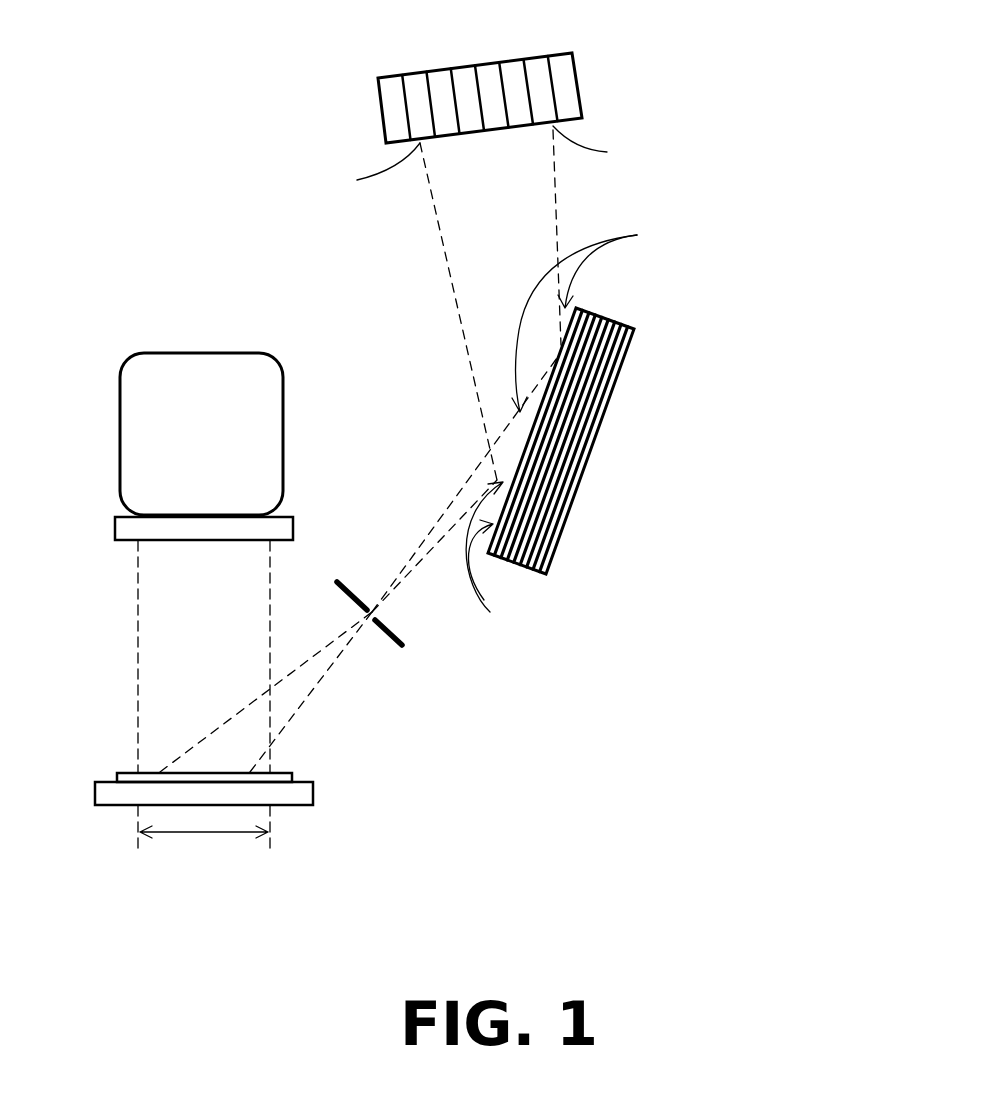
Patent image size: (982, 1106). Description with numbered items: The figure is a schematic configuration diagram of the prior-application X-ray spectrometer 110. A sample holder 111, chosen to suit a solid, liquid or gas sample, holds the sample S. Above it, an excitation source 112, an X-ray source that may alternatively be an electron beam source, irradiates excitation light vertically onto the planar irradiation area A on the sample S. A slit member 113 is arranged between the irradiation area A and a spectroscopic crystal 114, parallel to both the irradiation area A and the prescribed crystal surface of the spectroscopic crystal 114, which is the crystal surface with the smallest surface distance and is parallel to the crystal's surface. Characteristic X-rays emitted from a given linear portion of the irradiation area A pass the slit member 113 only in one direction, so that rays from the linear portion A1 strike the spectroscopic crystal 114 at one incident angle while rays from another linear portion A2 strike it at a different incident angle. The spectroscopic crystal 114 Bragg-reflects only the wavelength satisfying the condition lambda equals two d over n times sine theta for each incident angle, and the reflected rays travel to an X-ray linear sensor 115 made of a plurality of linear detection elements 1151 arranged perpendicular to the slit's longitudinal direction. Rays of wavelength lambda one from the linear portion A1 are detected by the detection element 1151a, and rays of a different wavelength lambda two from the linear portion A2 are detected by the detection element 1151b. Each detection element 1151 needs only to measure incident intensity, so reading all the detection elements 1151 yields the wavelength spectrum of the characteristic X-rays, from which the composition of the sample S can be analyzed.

The X-ray spectrometer 110 is at (596, 742).
The sample holder 111 is at (313, 790).
The excitation source 112 is at (155, 440).
The slit member 113 is at (393, 641).
The spectroscopic crystal 114 is at (580, 425).
The X-ray linear sensor 115 is at (582, 84).
The detection element 1151 is at (505, 88).
The detection element 1151a is at (418, 106).
The detection element 1151b is at (542, 85).
The sample S is at (202, 773).
The linear portion A1 is at (160, 773).
The linear portion A2 is at (252, 773).
The irradiation area A is at (204, 854).